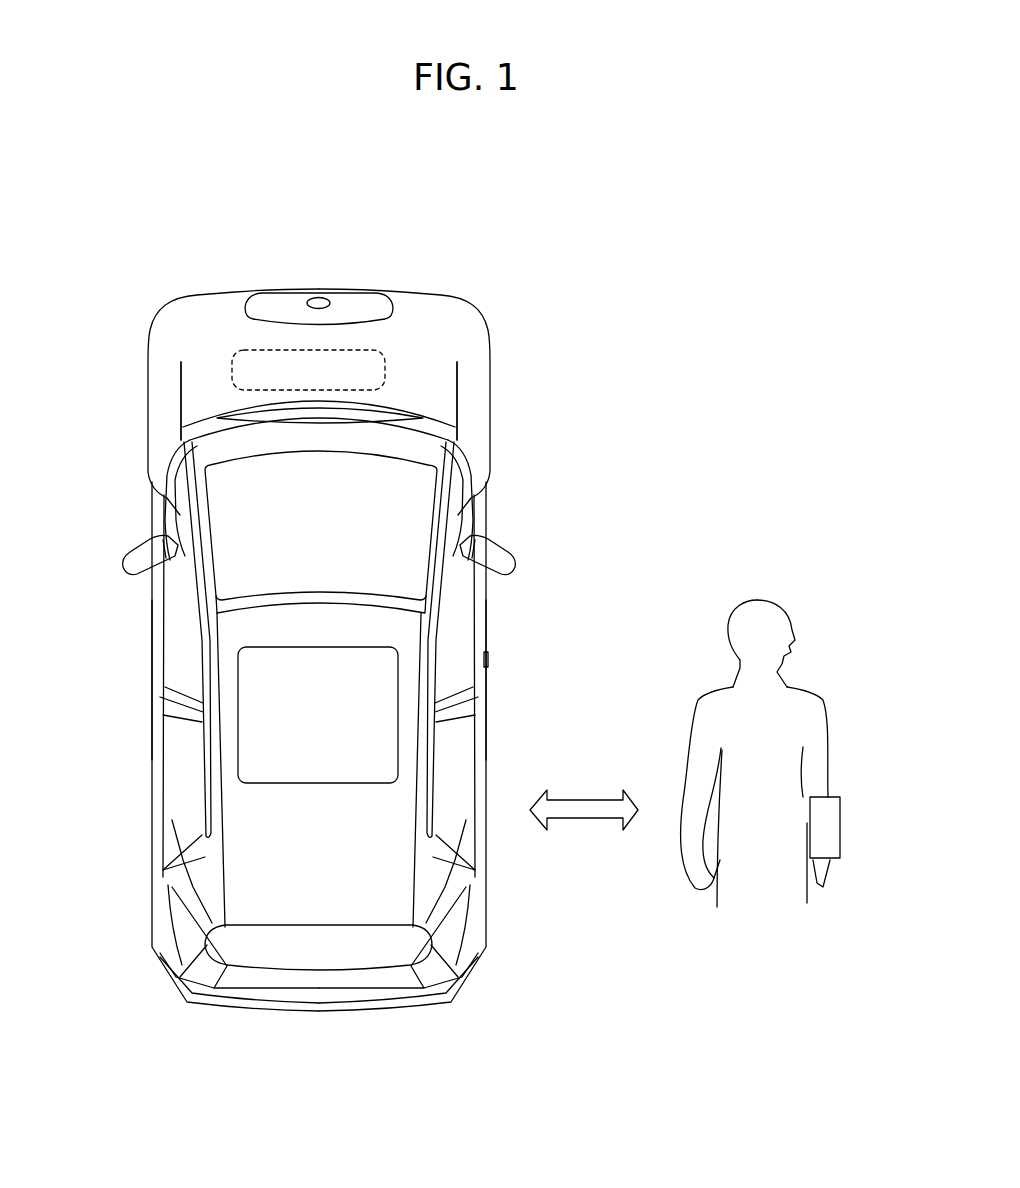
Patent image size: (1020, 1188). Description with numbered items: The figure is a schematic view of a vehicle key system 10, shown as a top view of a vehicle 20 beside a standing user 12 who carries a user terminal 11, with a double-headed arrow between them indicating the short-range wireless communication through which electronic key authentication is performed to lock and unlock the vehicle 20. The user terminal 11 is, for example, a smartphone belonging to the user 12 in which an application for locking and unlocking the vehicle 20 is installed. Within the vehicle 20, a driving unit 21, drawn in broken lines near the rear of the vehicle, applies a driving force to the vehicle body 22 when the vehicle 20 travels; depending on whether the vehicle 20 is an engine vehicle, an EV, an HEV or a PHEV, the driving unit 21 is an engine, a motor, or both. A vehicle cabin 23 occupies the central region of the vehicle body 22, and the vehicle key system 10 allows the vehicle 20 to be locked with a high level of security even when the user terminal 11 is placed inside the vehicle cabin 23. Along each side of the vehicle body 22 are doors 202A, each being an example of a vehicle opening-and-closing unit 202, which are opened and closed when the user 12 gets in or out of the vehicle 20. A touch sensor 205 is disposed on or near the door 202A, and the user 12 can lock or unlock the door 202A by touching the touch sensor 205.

The vehicle key system 10 is at (340, 605).
The user terminal 11 is at (840, 833).
The user 12 is at (758, 593).
The vehicle 20 is at (314, 319).
The driving unit 21 is at (255, 352).
The vehicle body 22 is at (388, 292).
The vehicle cabin 23 is at (260, 805).
The vehicle opening-and-closing unit 202 is at (152, 727).
The door 202A is at (486, 625).
The touch sensor 205 is at (489, 658).